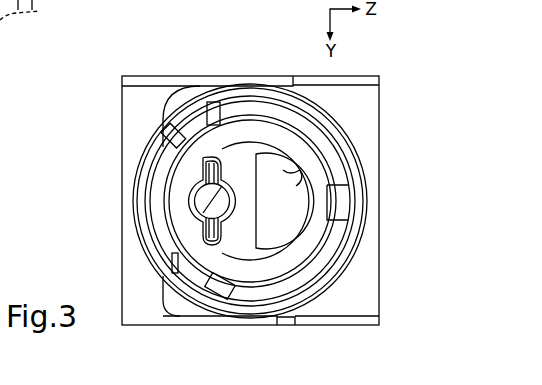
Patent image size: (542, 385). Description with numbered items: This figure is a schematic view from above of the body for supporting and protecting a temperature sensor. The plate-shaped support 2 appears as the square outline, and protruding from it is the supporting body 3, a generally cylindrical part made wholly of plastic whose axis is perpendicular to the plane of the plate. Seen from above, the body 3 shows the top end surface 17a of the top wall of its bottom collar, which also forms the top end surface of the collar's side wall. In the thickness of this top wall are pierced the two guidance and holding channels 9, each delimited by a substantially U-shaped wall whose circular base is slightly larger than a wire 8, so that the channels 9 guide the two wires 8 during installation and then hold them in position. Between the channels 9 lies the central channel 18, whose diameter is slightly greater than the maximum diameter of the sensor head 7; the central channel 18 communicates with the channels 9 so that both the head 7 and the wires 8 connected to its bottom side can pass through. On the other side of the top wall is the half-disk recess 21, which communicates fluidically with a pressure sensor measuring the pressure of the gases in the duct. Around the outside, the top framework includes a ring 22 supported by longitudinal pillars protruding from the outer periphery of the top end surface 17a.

The support 2 is at (130, 100).
The supporting body 3 is at (212, 86).
The head 7 is at (236, 203).
The wires 8 is at (221, 201).
The guidance and holding channels 9 is at (195, 160).
The top end surface 17a is at (232, 247).
The central channel 18 is at (180, 190).
The recess 21 is at (368, 202).
The ring 22 is at (295, 148).